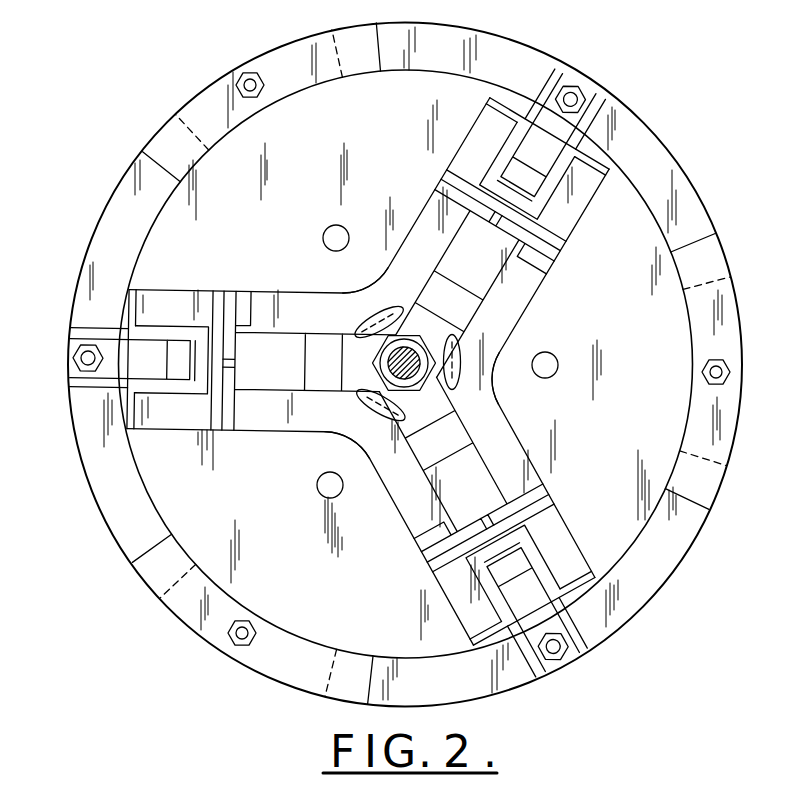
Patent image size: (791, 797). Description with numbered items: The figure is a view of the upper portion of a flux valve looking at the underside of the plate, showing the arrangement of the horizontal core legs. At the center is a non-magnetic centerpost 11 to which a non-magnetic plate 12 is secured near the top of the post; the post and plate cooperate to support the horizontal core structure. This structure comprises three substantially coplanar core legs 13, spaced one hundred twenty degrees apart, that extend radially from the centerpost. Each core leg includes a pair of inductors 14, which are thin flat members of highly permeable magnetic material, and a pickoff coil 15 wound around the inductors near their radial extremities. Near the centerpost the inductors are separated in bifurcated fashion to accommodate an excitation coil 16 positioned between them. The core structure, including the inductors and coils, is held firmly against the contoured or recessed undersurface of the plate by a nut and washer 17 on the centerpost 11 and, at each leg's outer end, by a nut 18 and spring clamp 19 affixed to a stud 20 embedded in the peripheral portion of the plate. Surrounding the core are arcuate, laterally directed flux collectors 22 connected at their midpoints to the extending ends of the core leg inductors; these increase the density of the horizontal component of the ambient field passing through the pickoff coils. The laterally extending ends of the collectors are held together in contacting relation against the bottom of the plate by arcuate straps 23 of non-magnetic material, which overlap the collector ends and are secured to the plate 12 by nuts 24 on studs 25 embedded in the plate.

The centerpost 11 is at (395, 370).
The non-magnetic plate 12 is at (419, 117).
The core legs 13 is at (228, 275).
The inductors 14 is at (294, 291).
The pickoff coil 15 is at (152, 290).
The excitation coil 16 is at (362, 325).
The nut and washer 17 is at (413, 315).
The nut 18 is at (72, 366).
The spring clamp 19 is at (157, 394).
The stud 20 is at (75, 355).
The flux collectors 22 is at (118, 200).
The arcuate straps 23 is at (726, 438).
The nuts 24 is at (251, 70).
The studs 25 is at (264, 95).